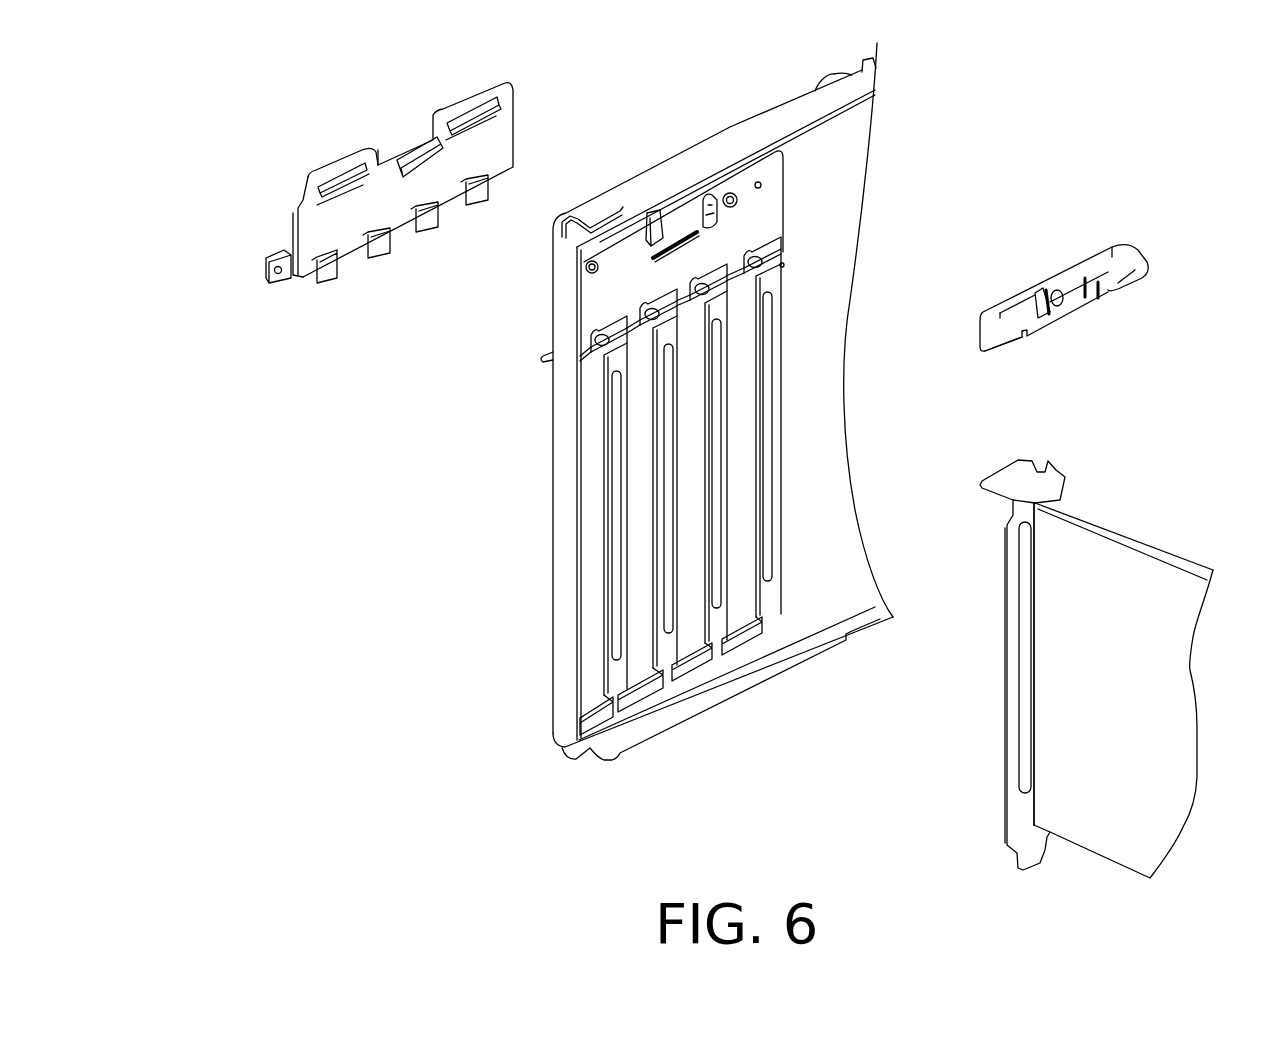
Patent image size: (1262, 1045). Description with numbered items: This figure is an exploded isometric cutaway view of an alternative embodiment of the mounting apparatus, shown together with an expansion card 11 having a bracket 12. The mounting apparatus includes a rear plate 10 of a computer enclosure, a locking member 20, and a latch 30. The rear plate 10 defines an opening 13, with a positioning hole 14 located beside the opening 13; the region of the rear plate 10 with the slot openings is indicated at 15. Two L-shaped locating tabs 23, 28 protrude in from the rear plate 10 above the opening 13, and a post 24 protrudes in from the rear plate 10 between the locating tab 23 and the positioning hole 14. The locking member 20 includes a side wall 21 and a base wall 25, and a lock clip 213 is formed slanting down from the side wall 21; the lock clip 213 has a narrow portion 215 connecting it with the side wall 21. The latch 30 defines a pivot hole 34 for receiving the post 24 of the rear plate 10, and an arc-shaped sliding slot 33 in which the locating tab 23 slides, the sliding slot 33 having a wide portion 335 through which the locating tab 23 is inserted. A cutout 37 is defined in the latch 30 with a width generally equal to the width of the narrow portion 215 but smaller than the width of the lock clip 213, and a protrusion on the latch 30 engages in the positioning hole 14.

The rear plate 10 is at (855, 135).
The expansion card 11 is at (1089, 669).
The card bracket 12 is at (1018, 810).
The opening 13 is at (685, 238).
The positioning hole 14 is at (758, 182).
The slot region with ribs 15 is at (588, 522).
The locking member 20 is at (394, 167).
The side wall 21 is at (503, 97).
The locating tab 23 is at (708, 208).
The post 24 is at (730, 193).
The base wall 25 is at (283, 253).
The locating tab 28 is at (655, 235).
The latch 30 is at (1107, 297).
The sliding slot 33 is at (1050, 320).
The pivot hole 34 is at (1065, 299).
The cutout 37 is at (1007, 343).
The lock clip 213 is at (430, 157).
The narrow portion 215 is at (397, 157).
The wide portion 335 is at (1040, 300).